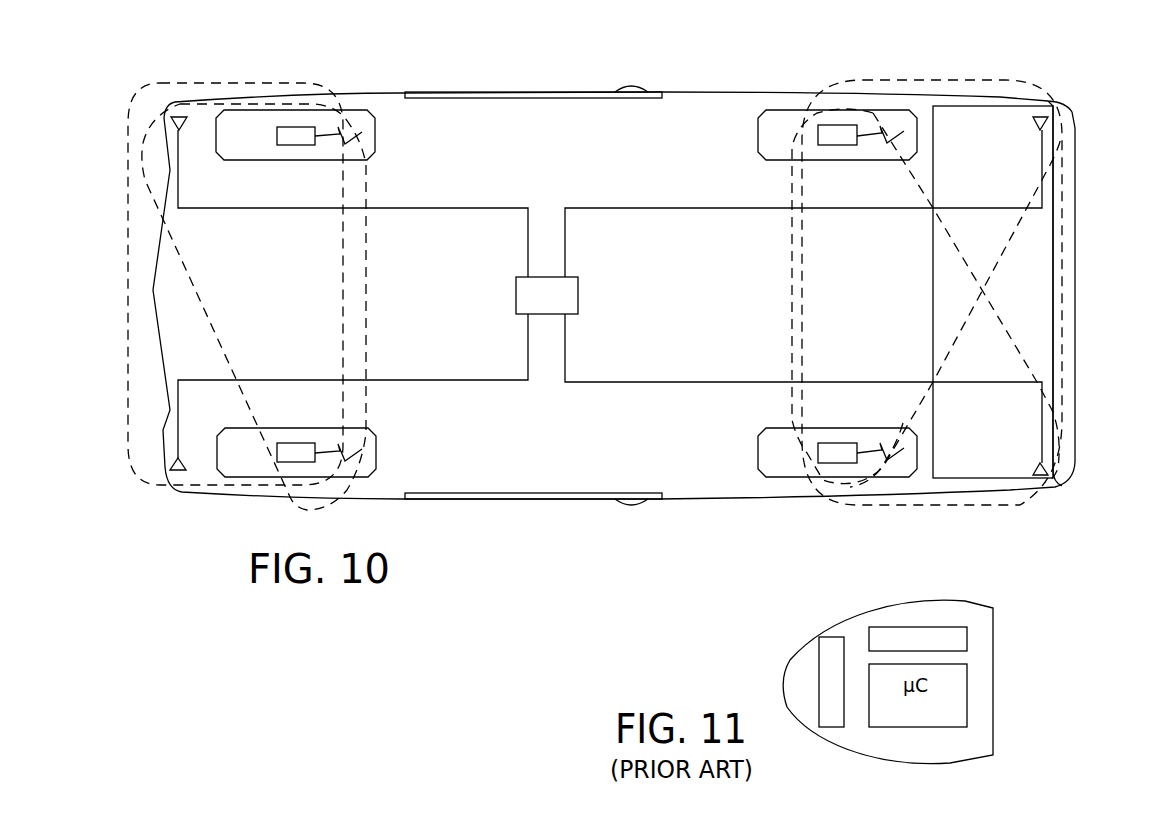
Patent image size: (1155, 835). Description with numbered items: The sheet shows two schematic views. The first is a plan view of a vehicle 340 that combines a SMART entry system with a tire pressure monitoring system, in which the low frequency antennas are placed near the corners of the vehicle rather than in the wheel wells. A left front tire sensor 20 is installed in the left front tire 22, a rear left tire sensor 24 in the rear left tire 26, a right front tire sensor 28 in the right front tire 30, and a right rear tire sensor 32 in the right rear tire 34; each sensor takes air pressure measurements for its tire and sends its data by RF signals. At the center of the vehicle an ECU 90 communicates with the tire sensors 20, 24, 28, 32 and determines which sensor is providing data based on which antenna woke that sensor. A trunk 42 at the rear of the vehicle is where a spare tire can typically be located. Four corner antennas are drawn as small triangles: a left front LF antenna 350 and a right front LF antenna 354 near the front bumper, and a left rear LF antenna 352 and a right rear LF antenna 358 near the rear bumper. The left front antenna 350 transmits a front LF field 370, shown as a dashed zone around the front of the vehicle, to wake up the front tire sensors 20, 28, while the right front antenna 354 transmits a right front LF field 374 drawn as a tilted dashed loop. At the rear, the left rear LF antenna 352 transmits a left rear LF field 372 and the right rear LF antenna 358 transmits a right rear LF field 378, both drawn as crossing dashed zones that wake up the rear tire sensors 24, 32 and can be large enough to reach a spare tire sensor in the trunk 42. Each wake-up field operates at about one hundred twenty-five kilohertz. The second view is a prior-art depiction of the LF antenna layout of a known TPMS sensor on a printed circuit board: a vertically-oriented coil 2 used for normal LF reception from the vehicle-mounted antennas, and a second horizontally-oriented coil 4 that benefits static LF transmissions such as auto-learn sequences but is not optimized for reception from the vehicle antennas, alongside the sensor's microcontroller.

In FIG. 10, the vehicle 340 is at (1026, 62).
In FIG. 10, the trunk 42 is at (1042, 238).
In FIG. 10, the ECU 90 is at (516, 287).
In FIG. 10, the right front tire 30 is at (216, 137).
In FIG. 10, the right front tire sensor 28 is at (297, 147).
In FIG. 10, the left front tire 22 is at (216, 455).
In FIG. 10, the left front tire sensor 20 is at (297, 443).
In FIG. 10, the right rear tire 34 is at (758, 137).
In FIG. 10, the right rear tire sensor 32 is at (840, 147).
In FIG. 10, the rear left tire 26 is at (758, 455).
In FIG. 10, the rear left tire sensor 24 is at (840, 443).
In FIG. 10, the right front LF antenna 354 is at (172, 121).
In FIG. 10, the left front LF antenna 350 is at (172, 467).
In FIG. 10, the right rear LF antenna 358 is at (1048, 125).
In FIG. 10, the left rear LF antenna 352 is at (1048, 466).
In FIG. 10, the front LF field 370 is at (342, 318).
In FIG. 10, the right front LF field 374 is at (190, 278).
In FIG. 10, the right rear LF field 378 is at (1008, 258).
In FIG. 10, the left rear LF field 372 is at (1010, 333).
In FIG. 11, the vertically-oriented coil 2 is at (827, 670).
In FIG. 11, the horizontally-oriented coil 4 is at (916, 634).